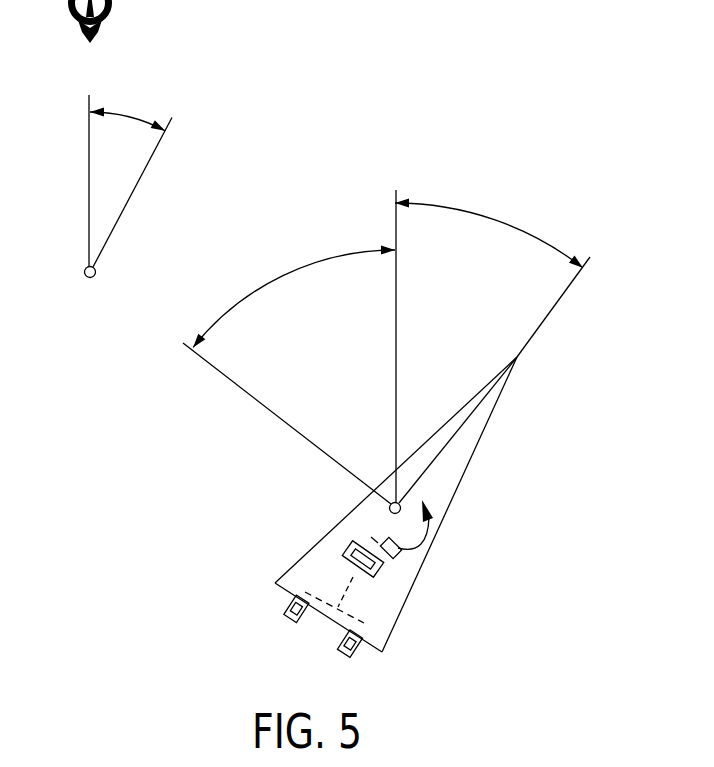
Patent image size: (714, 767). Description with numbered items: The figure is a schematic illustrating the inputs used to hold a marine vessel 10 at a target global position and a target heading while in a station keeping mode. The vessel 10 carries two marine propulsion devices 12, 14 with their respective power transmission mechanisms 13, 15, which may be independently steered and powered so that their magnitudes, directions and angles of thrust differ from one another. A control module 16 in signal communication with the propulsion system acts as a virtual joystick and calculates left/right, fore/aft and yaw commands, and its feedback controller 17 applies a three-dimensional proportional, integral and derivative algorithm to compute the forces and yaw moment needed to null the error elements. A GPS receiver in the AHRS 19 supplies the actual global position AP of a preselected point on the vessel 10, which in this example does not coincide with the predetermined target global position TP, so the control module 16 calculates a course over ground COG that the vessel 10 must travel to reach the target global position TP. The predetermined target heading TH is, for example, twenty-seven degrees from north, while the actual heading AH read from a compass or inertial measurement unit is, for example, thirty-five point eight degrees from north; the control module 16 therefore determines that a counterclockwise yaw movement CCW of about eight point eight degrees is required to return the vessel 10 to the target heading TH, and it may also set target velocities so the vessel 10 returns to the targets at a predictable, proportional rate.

The marine vessel 10 is at (423, 562).
The marine propulsion device 12 is at (283, 605).
The power transmission mechanism 13 is at (290, 614).
The marine propulsion device 14 is at (360, 652).
The power transmission mechanism 15 is at (345, 645).
The control module 16 is at (378, 570).
The feedback controller 17 is at (345, 553).
The AHRS 19 is at (402, 551).
The target global position TP is at (84, 277).
The target heading TH is at (123, 115).
The actual global position AP is at (389, 510).
The actual heading AH is at (493, 221).
The course over ground COG is at (274, 282).
The counterclockwise yaw movement CCW is at (440, 522).